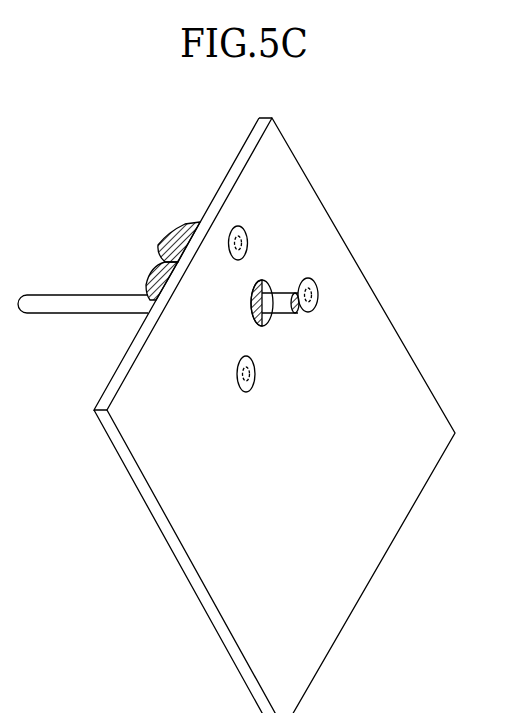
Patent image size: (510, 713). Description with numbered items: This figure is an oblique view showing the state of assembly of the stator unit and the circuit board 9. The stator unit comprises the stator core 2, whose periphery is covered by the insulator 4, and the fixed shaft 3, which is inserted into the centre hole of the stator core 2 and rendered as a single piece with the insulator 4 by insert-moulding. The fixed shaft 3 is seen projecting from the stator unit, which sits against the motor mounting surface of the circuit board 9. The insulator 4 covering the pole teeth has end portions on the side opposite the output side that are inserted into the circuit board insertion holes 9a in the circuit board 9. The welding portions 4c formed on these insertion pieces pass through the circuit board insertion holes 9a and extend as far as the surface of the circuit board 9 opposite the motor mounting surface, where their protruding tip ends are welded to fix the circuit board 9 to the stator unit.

The stator core 2 is at (187, 223).
The fixed shaft 3 is at (45, 294).
The insulator 4 is at (150, 268).
The welding portion 4c is at (245, 232).
The circuit board 9 is at (423, 398).
The circuit board insertion hole 9a is at (247, 243).